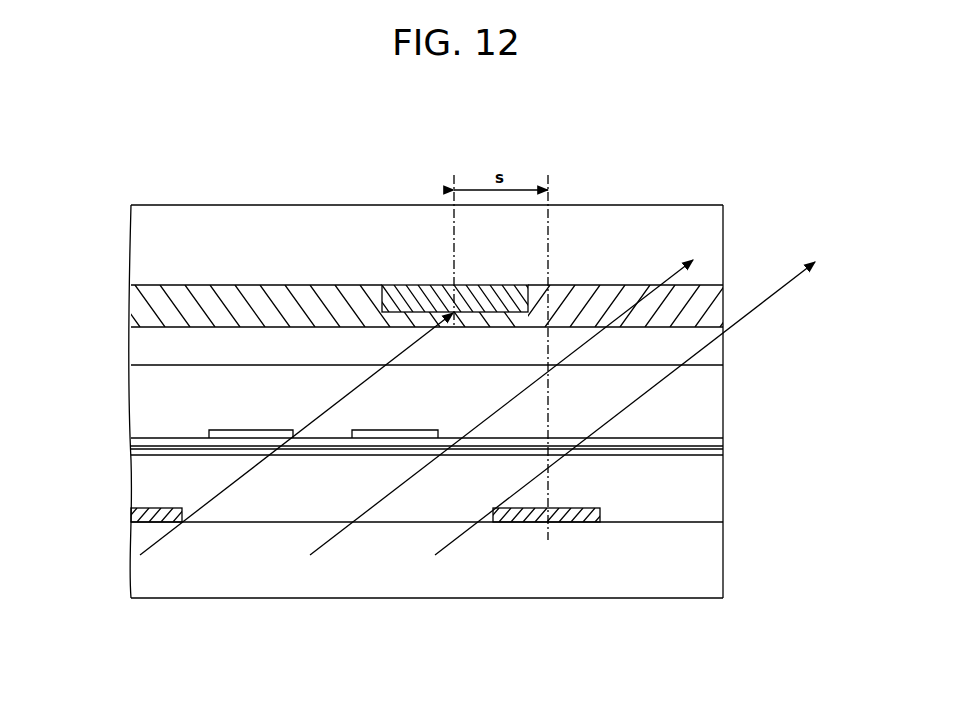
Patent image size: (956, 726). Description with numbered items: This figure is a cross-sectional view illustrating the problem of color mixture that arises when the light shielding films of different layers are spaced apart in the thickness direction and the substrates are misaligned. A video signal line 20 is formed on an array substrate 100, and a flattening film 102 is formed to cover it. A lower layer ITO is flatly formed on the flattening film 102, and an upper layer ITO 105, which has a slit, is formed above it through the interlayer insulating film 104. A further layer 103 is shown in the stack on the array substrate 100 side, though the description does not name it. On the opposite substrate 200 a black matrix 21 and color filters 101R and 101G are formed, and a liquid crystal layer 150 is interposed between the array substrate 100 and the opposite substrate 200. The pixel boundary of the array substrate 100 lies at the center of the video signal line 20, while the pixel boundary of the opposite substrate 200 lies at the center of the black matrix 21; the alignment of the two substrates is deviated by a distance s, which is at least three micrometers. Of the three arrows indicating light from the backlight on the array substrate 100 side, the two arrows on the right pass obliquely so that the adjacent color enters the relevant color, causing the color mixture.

The array substrate 100 is at (702, 562).
The flattening film 102 is at (702, 493).
The light shielding layer 103 is at (707, 457).
The interlayer insulating film 104 is at (723, 438).
The upper layer ITO 105 is at (260, 432).
The liquid crystal layer 150 is at (700, 399).
The opposite substrate 200 is at (700, 243).
The color filter 101R is at (242, 302).
The color filter 101G is at (593, 303).
The black matrix 21 is at (432, 298).
The video signal line 20 is at (527, 520).